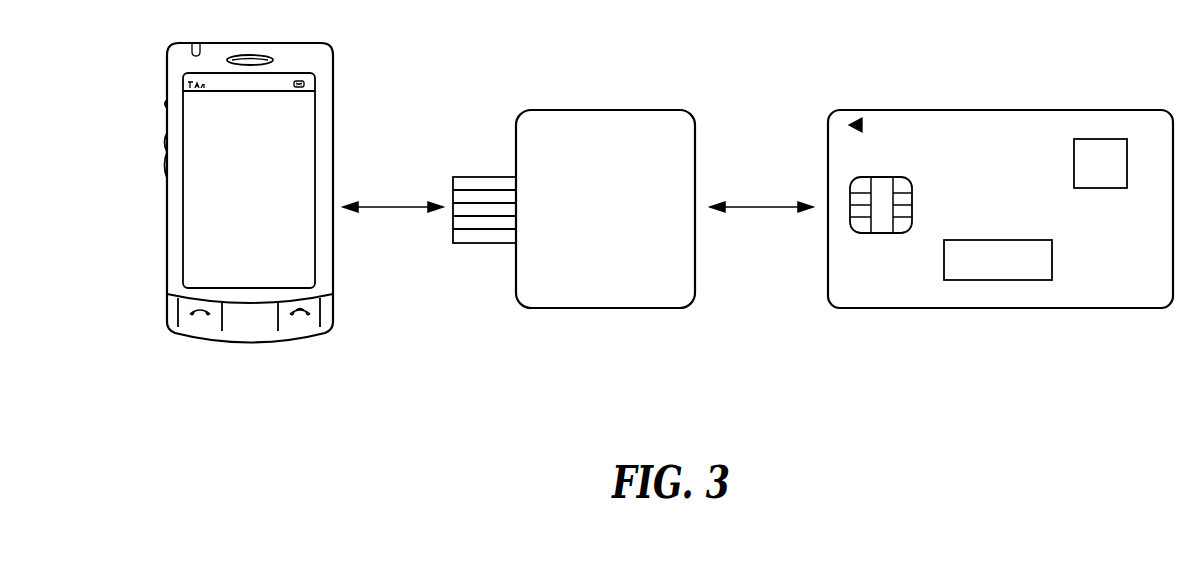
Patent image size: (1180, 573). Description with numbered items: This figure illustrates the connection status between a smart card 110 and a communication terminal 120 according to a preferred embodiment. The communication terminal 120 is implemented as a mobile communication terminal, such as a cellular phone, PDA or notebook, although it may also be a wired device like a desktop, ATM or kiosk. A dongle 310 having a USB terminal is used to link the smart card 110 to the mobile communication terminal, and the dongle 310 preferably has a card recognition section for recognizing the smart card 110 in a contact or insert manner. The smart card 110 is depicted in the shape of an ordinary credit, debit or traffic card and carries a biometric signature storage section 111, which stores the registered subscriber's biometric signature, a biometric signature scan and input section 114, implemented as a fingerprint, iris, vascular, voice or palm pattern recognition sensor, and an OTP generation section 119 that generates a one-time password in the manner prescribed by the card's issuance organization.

The communication terminal 120 is at (334, 119).
The dongle 310 is at (604, 109).
The smart card 110 is at (1000, 215).
The biometric signature storage section 111 is at (878, 176).
The biometric signature scan and input section 114 is at (1098, 139).
The OTP generation section 119 is at (996, 278).